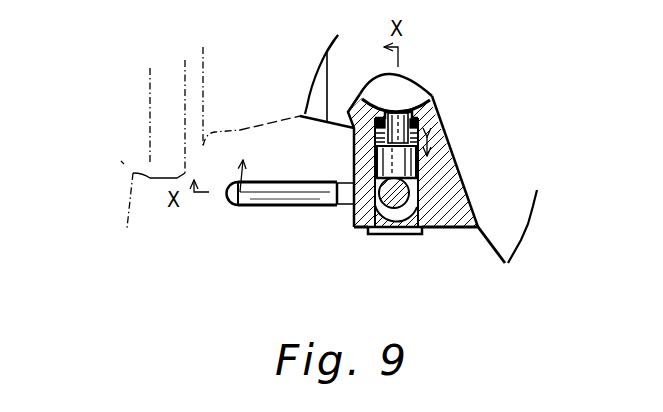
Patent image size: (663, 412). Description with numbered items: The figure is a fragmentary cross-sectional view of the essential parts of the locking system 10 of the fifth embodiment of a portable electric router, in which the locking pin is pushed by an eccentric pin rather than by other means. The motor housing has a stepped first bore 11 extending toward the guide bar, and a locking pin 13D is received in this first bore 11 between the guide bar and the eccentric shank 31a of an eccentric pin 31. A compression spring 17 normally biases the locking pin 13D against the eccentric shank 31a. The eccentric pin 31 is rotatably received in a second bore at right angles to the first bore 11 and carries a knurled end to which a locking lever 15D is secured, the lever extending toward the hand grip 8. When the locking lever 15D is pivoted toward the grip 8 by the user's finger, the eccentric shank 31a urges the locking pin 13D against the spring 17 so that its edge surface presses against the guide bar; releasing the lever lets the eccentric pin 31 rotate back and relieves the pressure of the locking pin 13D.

The hand grip 8 is at (210, 150).
The locking system 10 is at (325, 216).
The first bore 11 is at (418, 130).
The locking pin 13D is at (418, 117).
The locking lever 15D is at (275, 204).
The compression spring 17 is at (378, 127).
The eccentric pin 31 is at (382, 234).
The eccentric shank 31a is at (413, 234).